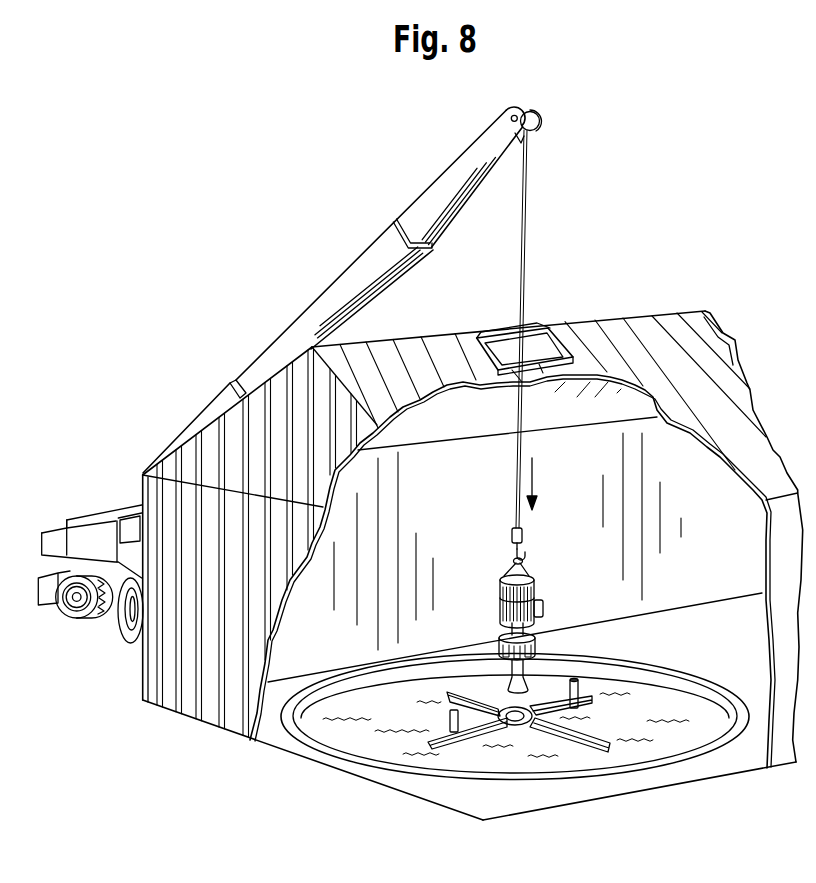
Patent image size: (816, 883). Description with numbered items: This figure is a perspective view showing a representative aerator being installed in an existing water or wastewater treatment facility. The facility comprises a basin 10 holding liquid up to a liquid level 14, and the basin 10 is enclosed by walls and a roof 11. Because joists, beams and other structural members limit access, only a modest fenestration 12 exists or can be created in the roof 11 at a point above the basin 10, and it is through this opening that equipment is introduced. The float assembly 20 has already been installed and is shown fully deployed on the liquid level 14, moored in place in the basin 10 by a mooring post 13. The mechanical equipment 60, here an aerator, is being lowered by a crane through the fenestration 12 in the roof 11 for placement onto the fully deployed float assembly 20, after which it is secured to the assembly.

The basin 10 is at (702, 673).
The roof 11 is at (673, 318).
The fenestration 12 is at (557, 342).
The mooring post 13 is at (576, 680).
The liquid level 14 is at (684, 741).
The float assembly 20 is at (606, 734).
The mechanical equipment 60 is at (541, 584).